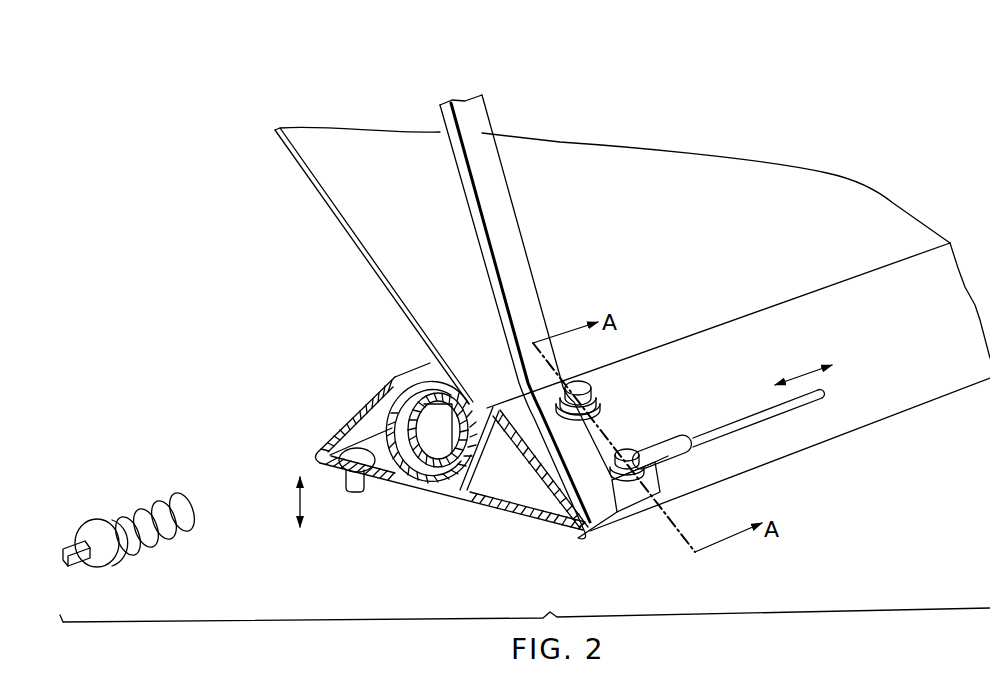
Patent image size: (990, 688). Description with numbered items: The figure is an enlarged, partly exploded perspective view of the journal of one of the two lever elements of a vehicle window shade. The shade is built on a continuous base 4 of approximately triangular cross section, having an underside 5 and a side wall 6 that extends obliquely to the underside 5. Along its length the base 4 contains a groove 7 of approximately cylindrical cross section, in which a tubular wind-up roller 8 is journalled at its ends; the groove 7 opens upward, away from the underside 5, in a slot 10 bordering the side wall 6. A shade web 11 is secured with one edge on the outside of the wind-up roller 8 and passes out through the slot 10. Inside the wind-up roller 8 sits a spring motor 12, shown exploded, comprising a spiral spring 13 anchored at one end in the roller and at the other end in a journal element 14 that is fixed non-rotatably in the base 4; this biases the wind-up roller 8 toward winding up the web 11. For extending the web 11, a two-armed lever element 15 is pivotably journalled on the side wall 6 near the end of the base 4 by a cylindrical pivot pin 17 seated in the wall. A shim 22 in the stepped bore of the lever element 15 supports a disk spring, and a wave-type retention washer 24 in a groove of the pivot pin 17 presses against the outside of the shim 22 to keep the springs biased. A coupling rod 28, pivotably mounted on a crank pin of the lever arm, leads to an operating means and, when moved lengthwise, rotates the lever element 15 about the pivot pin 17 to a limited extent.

The base 4 is at (358, 404).
The underside 5 is at (534, 520).
The side wall 6 is at (825, 345).
The groove 7 is at (423, 465).
The wind-up roller 8 is at (443, 463).
The slot 10 is at (415, 385).
The shade web 11 is at (304, 178).
The spring motor 12 is at (140, 467).
The spiral spring 13 is at (175, 543).
The journal element 14 is at (100, 563).
The lever element 15 is at (484, 167).
The pivot pin 17 is at (583, 385).
The shim 22 is at (600, 412).
The retention washer 24 is at (600, 398).
The coupling rod 28 is at (795, 408).